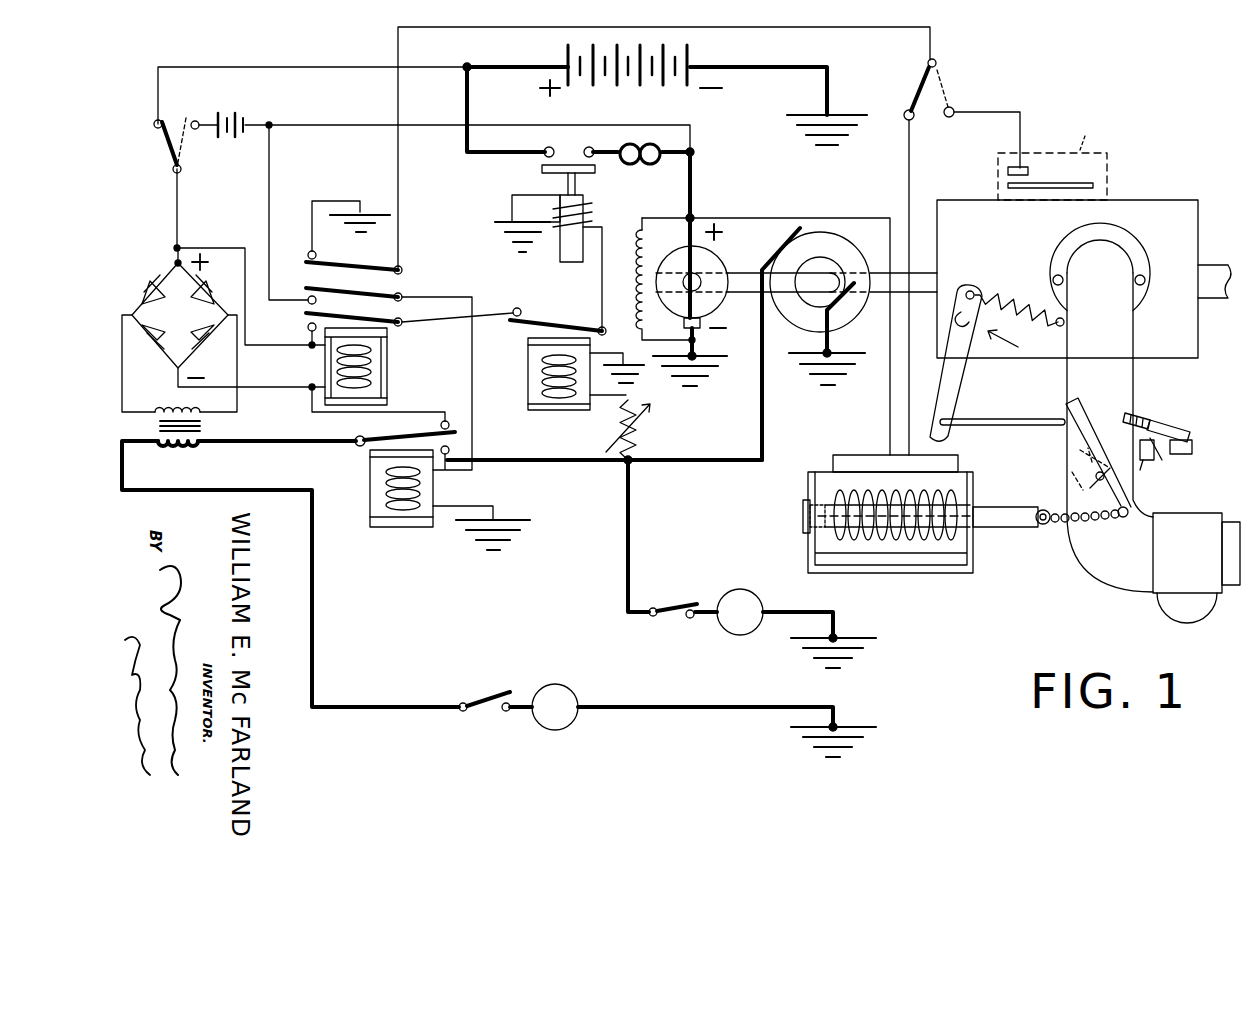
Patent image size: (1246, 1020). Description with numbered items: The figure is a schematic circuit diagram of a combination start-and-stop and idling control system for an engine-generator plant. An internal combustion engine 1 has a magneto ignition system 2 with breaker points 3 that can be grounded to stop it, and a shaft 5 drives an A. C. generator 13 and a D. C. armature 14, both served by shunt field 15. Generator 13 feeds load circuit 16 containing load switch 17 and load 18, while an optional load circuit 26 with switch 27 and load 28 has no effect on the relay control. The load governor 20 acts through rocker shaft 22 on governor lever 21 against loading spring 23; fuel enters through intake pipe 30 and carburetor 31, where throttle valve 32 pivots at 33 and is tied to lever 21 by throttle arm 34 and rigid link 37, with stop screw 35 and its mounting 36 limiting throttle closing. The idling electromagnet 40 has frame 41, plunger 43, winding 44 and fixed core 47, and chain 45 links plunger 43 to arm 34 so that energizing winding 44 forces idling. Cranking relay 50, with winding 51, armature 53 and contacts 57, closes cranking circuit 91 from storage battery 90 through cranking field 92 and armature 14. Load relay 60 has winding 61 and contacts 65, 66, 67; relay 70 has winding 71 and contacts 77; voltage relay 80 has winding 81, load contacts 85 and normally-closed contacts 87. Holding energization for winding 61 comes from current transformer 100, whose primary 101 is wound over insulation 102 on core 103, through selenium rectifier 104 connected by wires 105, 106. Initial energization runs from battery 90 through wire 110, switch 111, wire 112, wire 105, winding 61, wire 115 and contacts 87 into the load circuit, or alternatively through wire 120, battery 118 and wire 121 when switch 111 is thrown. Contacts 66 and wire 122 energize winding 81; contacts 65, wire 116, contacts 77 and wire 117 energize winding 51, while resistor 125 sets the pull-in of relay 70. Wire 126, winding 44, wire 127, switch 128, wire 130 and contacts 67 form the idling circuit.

The internal combustion engine 1 is at (1172, 208).
The magneto ignition system 2 is at (1098, 160).
The breaker points 3 is at (1030, 172).
The shaft 5 is at (923, 270).
The A. C. armature or generator 13 is at (846, 256).
The D. C. armature or generator 14 is at (712, 270).
The shunt field 15 is at (633, 238).
The load circuit 16 is at (550, 462).
The load switch 17 is at (490, 697).
The load appliance 18 is at (574, 700).
The load governor 20 is at (1016, 344).
The governor operating arm or lever 21 is at (958, 392).
The rocker shaft 22 is at (962, 300).
The loading spring 23 is at (1019, 292).
The additional load circuit 26 is at (628, 552).
The switch 27 is at (679, 603).
The load 28 is at (745, 636).
The fuel intake pipe 30 is at (1122, 393).
The carburetor 31 is at (1183, 515).
The throttle valve 32 is at (1072, 472).
The pivot 33 is at (1100, 478).
The throttle arm 34 is at (1068, 432).
The stop screw 35 is at (1146, 415).
The stop bracket 36 is at (1148, 458).
The rigid link 37 is at (1024, 418).
The idling electromagnet or solenoid 40 is at (912, 587).
The main iron frame 41 is at (973, 571).
The plunger 43 is at (1015, 520).
The operating winding 44 is at (918, 490).
The chain 45 is at (1090, 523).
The fixed iron core or stop 47 is at (803, 516).
The cranking relay 50 is at (540, 193).
The operating winding 51 is at (583, 206).
The armature 53 is at (565, 246).
The contacts 57 is at (566, 165).
The load relay 60 is at (417, 400).
The operating winding 61 is at (372, 368).
The contacts 65 is at (309, 327).
The contacts 66 is at (309, 298).
The contacts 67 is at (322, 258).
The cranking-stopping relay 70 is at (525, 389).
The operating winding 71 is at (541, 397).
The contacts 77 is at (522, 314).
The voltage relay 80 is at (369, 500).
The operating winding 81 is at (388, 487).
The contacts 85 is at (458, 443).
The contacts 87 is at (448, 420).
The storage battery 90 is at (690, 58).
The engine cranking circuit 91 is at (472, 100).
The cranking field 92 is at (652, 163).
The current transformer 100 is at (209, 457).
The primary winding 101 is at (174, 455).
The insulation 102 is at (200, 416).
The toroidal core 103 is at (158, 428).
The selenium rectifier 104 is at (141, 305).
The wire 105 is at (222, 248).
The wire 106 is at (290, 386).
The wire 110 is at (250, 67).
The switch 111 is at (160, 143).
The wire 112 is at (177, 212).
The wire 115 is at (312, 412).
The wire 116 is at (452, 322).
The wire 117 is at (602, 287).
The battery 118 is at (247, 120).
The wire 120 is at (318, 125).
The conductor 121 is at (272, 198).
The wire 122 is at (440, 297).
The adjustable resistor 125 is at (637, 433).
The wire 126 is at (760, 218).
The wire 127 is at (909, 163).
The switch 128 is at (913, 92).
The wire 130 is at (400, 192).